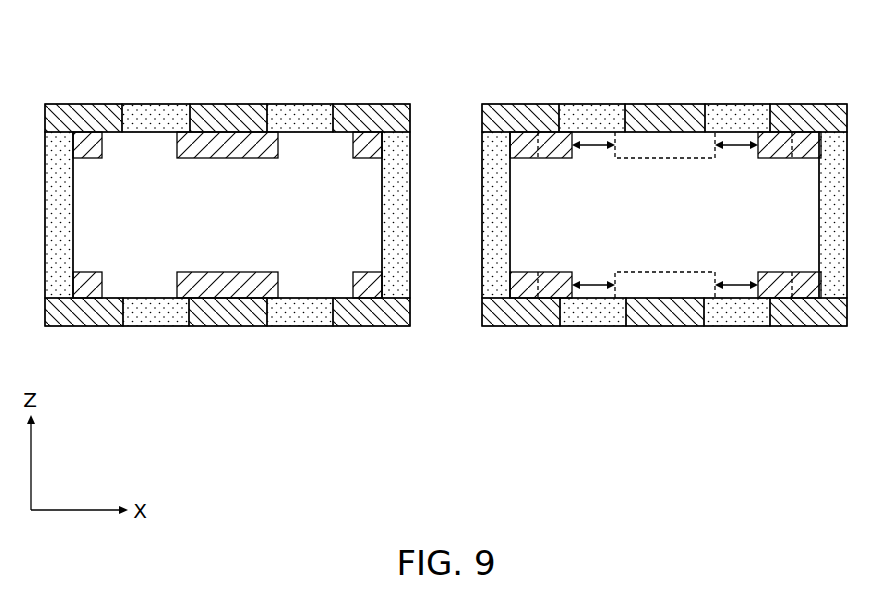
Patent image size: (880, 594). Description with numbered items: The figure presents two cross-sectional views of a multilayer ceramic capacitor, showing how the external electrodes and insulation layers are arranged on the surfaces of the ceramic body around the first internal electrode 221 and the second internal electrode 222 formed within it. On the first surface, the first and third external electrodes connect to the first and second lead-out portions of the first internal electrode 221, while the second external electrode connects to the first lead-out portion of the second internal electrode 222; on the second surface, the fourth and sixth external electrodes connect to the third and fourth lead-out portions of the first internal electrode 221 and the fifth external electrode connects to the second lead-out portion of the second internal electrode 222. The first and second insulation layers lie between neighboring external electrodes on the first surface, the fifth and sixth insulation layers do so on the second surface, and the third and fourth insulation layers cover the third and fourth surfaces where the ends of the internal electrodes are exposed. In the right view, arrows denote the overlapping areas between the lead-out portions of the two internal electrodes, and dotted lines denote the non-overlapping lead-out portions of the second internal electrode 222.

The first internal electrode 221 is at (140, 158).
The second internal electrode 222 is at (583, 172).